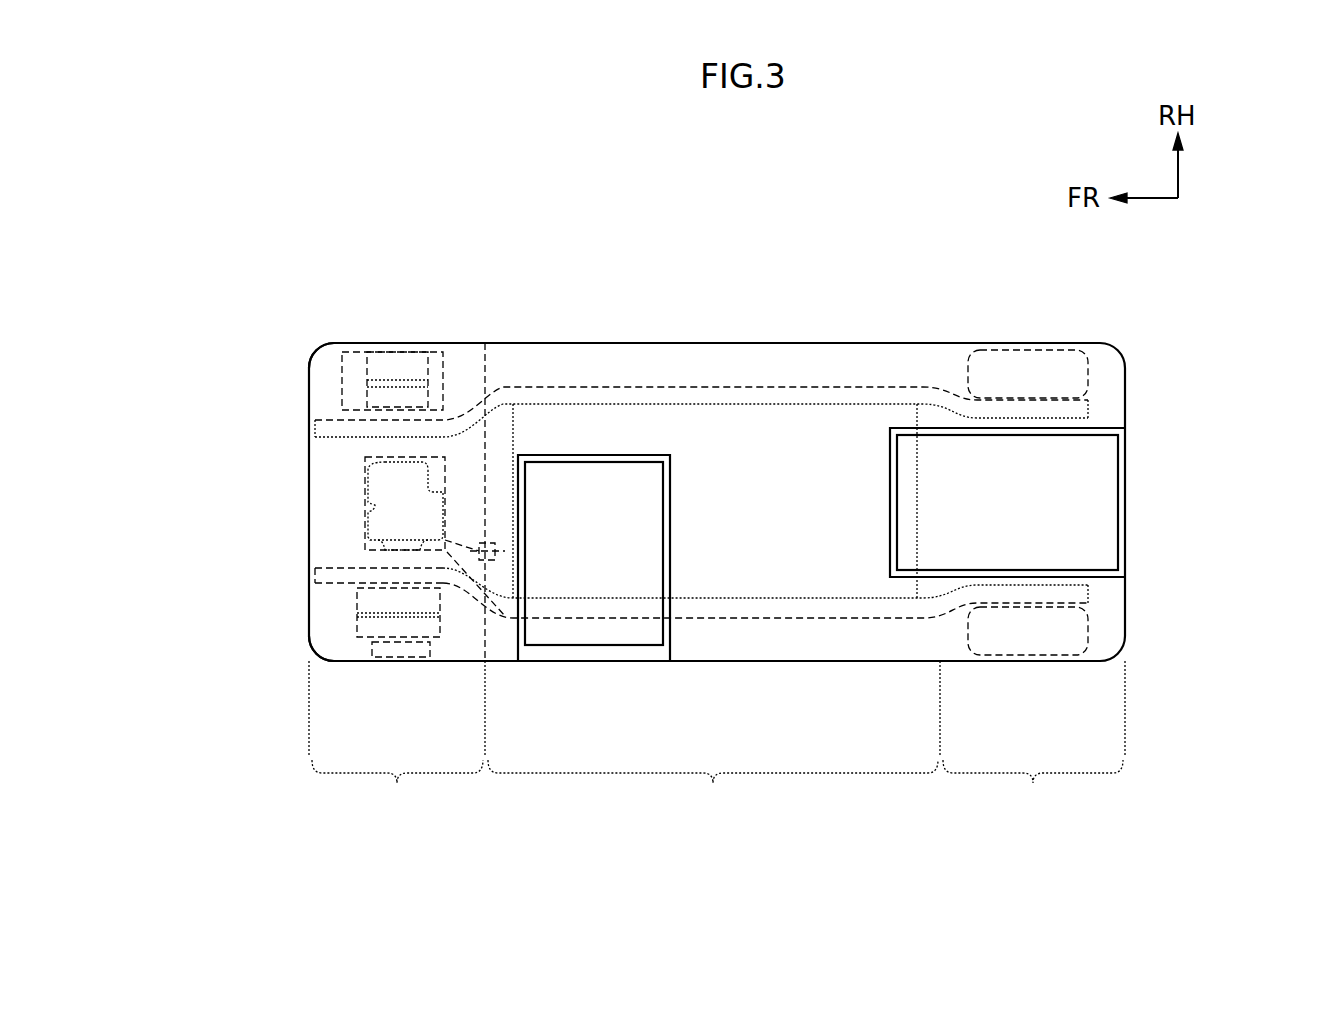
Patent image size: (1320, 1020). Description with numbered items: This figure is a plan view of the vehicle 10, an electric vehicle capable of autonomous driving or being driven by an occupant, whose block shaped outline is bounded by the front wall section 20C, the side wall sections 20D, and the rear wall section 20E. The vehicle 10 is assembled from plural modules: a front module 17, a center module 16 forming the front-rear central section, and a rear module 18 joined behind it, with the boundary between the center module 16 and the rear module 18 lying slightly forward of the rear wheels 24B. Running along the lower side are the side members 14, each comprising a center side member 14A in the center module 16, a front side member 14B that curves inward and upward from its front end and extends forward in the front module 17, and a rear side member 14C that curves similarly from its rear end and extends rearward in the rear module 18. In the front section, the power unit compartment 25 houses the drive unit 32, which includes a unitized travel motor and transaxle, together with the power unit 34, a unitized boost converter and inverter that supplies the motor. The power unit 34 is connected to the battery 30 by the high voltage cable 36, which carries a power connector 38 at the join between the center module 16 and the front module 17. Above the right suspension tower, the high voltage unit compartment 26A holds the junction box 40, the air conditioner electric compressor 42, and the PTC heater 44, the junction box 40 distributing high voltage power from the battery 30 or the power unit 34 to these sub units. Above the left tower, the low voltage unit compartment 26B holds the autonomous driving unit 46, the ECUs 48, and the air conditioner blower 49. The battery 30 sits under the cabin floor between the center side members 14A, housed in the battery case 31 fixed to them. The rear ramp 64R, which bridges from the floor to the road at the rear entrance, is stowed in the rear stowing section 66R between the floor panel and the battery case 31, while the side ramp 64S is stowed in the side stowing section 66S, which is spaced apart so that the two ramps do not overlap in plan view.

The vehicle 10 is at (907, 220).
The side member 14 is at (618, 376).
The center side member 14A is at (723, 395).
The front side member 14B is at (388, 430).
The rear side member 14C is at (1020, 417).
The center module 16 is at (713, 786).
The front module 17 is at (397, 786).
The rear module 18 is at (1033, 786).
The front wall section 20C is at (309, 480).
The side wall section 20D is at (568, 343).
The rear wall section 20E is at (1125, 408).
The rear wheel 24B is at (1007, 635).
The power unit compartment 25 is at (329, 449).
The high voltage unit compartment 26A is at (314, 349).
The low voltage unit compartment 26B is at (311, 638).
The battery 30 is at (833, 590).
The battery case 31 is at (763, 598).
The drive unit 32 is at (393, 510).
The power unit 34 is at (378, 543).
The high voltage cable 36 is at (449, 562).
The power connector 38 is at (491, 562).
The junction box 40 is at (345, 352).
The air conditioner electric compressor 42 is at (427, 362).
The PTC heater 44 is at (428, 392).
The autonomous driving unit 46 is at (372, 601).
The ECU 48 is at (365, 623).
The air conditioner blower 49 is at (407, 650).
The rear ramp 64R is at (1067, 490).
The side ramp 64S is at (598, 648).
The rear stowing section 66R is at (1073, 577).
The side stowing section 66S is at (663, 648).